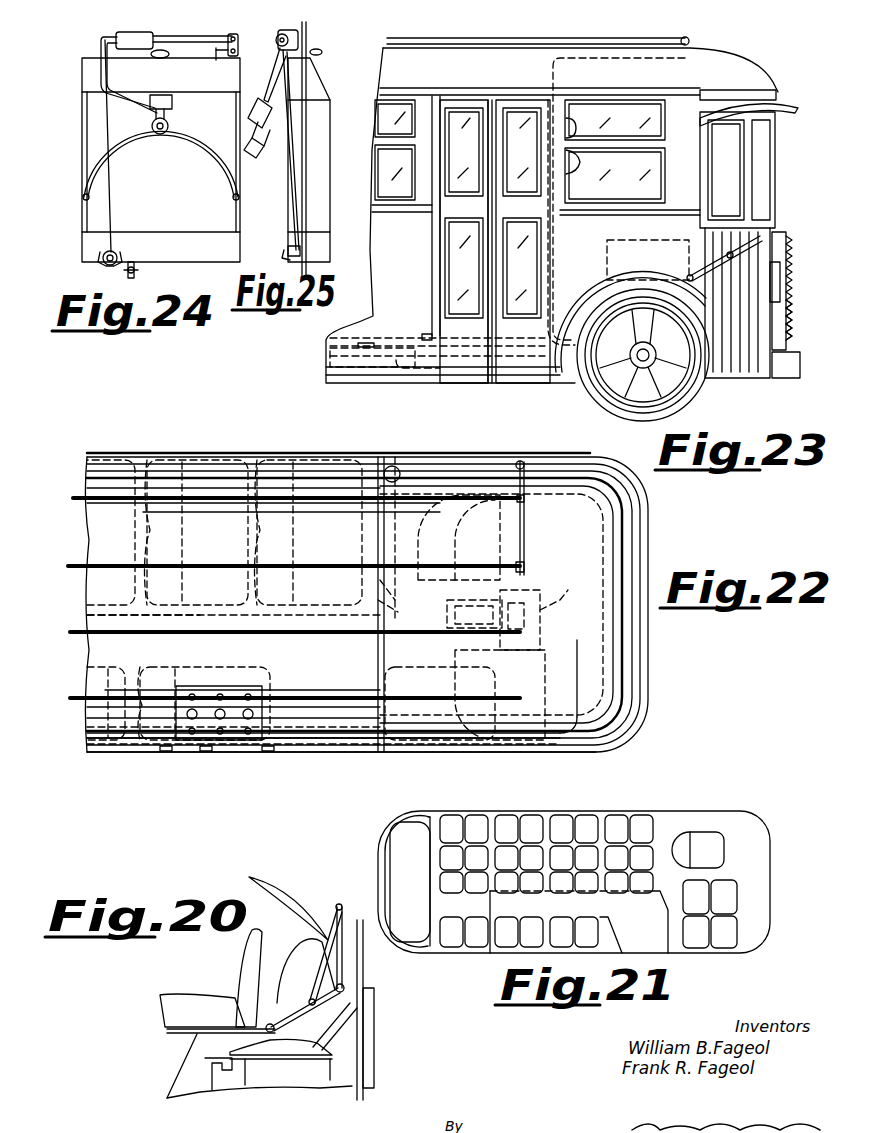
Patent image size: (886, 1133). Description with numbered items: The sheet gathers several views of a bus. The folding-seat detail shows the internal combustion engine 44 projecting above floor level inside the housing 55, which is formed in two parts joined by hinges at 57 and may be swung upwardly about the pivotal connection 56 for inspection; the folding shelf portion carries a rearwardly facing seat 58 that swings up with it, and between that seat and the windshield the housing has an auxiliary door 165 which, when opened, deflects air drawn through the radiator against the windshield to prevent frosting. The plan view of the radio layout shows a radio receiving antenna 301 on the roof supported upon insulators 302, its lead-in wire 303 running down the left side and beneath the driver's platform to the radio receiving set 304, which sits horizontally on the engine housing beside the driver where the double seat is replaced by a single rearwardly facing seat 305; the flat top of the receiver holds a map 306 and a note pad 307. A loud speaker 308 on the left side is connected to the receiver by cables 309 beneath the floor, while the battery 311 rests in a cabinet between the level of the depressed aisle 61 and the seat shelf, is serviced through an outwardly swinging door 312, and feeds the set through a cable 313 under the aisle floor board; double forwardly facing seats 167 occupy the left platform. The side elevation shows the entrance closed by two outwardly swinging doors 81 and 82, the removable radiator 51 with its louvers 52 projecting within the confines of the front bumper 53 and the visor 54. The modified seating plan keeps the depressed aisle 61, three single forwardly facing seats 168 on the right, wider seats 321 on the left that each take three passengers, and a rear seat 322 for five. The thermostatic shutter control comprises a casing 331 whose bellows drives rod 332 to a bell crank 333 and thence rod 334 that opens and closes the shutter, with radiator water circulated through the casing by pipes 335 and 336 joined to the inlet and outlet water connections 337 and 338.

In FIG. 24, the casing 331 is at (128, 38).
In FIG. 25, the casing 331 is at (282, 32).
In FIG. 24, the rod 332 is at (190, 38).
In FIG. 25, the bell crank 333 is at (278, 42).
In FIG. 24, the rod 334 is at (218, 56).
In FIG. 24, the pipe 335 is at (112, 70).
In FIG. 24, the pipe 336 is at (112, 172).
In FIG. 25, the pipe 336 is at (291, 178).
In FIG. 24, the inlet water connection 337 is at (172, 109).
In FIG. 25, the inlet water connection 337 is at (270, 140).
In FIG. 24, the outlet water connection 338 is at (104, 262).
In FIG. 25, the outlet water connection 338 is at (288, 250).
In FIG. 23, the radio receiving antenna 301 is at (442, 40).
In FIG. 22, the radio receiving antenna 301 is at (108, 500).
In FIG. 23, the insulators 302 is at (689, 40).
In FIG. 22, the insulators 302 is at (522, 560).
In FIG. 23, the lead-in wire 303 is at (688, 58).
In FIG. 22, the lead-in wire 303 is at (524, 463).
In FIG. 23, the radio receiving set 304 is at (672, 252).
In FIG. 22, the radio receiving set 304 is at (542, 612).
In FIG. 22, the single rearwardly facing seat 305 is at (500, 745).
In FIG. 22, the map 306 is at (450, 618).
In FIG. 22, the note pad 307 is at (530, 618).
In FIG. 23, the loud speaker 308 is at (580, 163).
In FIG. 22, the loud speaker 308 is at (384, 466).
In FIG. 22, the cables 309 is at (376, 588).
In FIG. 23, the battery 311 is at (362, 376).
In FIG. 22, the battery 311 is at (244, 740).
In FIG. 23, the outwardly swinging door 312 is at (430, 376).
In FIG. 23, the cable 313 is at (535, 382).
In FIG. 22, the cable 313 is at (358, 740).
In FIG. 21, the seats 321 is at (505, 836).
In FIG. 21, the rear seat 322 is at (410, 870).
In FIG. 23, the visor 54 is at (786, 104).
In FIG. 22, the visor 54 is at (640, 682).
In FIG. 23, the housing 55 is at (712, 268).
In FIG. 20, the housing 55 is at (278, 1028).
In FIG. 20, the pivotal connection 56 is at (346, 986).
In FIG. 20, the hinges 57 is at (333, 939).
In FIG. 21, the seat 58 is at (700, 934).
In FIG. 20, the seat 58 is at (184, 1002).
In FIG. 23, the radiator 51 is at (788, 248).
In FIG. 23, the louvers 52 is at (793, 328).
In FIG. 23, the front bumper 53 is at (796, 378).
In FIG. 22, the depressed aisle 61 is at (100, 622).
In FIG. 21, the depressed aisle 61 is at (579, 922).
In FIG. 23, the door 81 is at (522, 246).
In FIG. 23, the door 82 is at (446, 246).
In FIG. 20, the internal combustion engine 44 is at (272, 1068).
In FIG. 20, the auxiliary door 165 is at (338, 995).
In FIG. 22, the double forwardly facing seats 167 is at (176, 468).
In FIG. 22, the single forwardly facing seats 168 is at (145, 745).
In FIG. 21, the single forwardly facing seats 168 is at (518, 940).